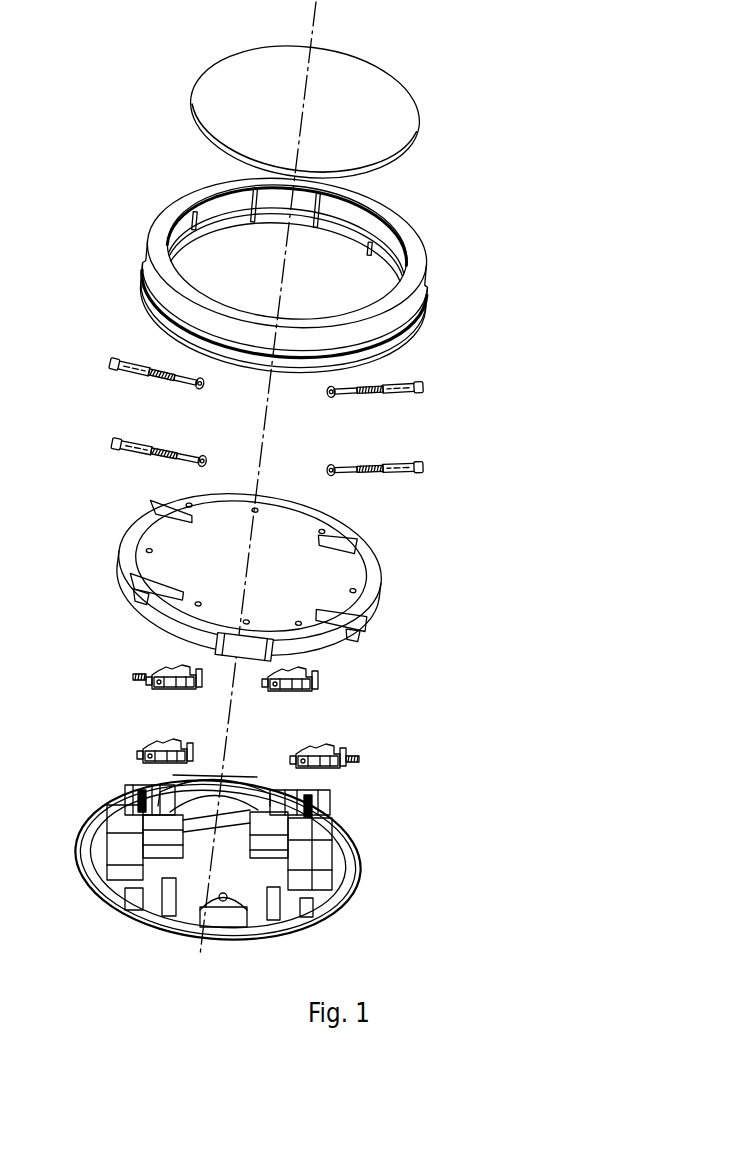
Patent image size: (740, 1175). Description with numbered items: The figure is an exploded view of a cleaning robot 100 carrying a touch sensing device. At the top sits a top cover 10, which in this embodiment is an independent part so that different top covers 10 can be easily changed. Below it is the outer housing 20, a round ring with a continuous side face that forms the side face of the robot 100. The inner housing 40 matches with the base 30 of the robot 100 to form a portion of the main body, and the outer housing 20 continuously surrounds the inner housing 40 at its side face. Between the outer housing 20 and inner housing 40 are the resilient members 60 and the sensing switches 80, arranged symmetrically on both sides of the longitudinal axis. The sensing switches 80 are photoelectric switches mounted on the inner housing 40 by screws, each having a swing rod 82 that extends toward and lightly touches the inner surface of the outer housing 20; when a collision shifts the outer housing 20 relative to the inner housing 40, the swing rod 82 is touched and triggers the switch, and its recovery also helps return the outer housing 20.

The top cover 10 is at (420, 137).
The outer housing 20 is at (420, 267).
The base 30 is at (256, 860).
The inner housing 40 is at (373, 558).
The resilient members 60 is at (110, 364).
The sensing switches 80 is at (150, 688).
The swing rod 82 is at (134, 677).
The cleaning robot 100 is at (346, 478).